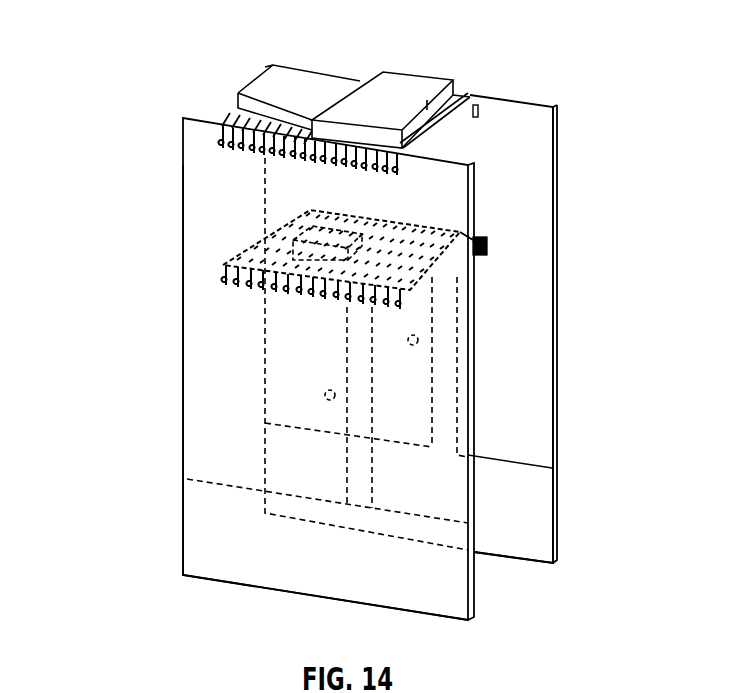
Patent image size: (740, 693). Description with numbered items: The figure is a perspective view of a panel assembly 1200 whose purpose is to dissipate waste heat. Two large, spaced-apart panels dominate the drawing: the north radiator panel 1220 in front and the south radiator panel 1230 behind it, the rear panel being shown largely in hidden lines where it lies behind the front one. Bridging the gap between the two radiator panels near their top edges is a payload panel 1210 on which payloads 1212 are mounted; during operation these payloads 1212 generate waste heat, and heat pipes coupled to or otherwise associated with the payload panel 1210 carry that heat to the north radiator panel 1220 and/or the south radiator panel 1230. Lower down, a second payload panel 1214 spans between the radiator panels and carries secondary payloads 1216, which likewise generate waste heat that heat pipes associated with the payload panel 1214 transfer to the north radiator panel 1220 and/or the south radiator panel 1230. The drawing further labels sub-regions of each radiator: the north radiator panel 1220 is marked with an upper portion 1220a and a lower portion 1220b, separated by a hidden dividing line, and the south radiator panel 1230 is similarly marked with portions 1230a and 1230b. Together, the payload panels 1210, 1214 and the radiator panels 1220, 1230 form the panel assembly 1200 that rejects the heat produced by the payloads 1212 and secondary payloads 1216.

The panel assembly 1200 is at (156, 40).
The payload panel 1210 is at (470, 96).
The payloads 1212 is at (327, 72).
The payload panel 1214 is at (487, 251).
The secondary payloads 1216 is at (383, 243).
The north radiator panel 1220 is at (200, 167).
The first portion of front circuit board 1220a is at (200, 392).
The second portion of front circuit board 1220b is at (200, 545).
The south radiator panel 1230 is at (540, 135).
The first portion of rear circuit board 1230a is at (535, 398).
The second portion of rear circuit board 1230b is at (535, 522).